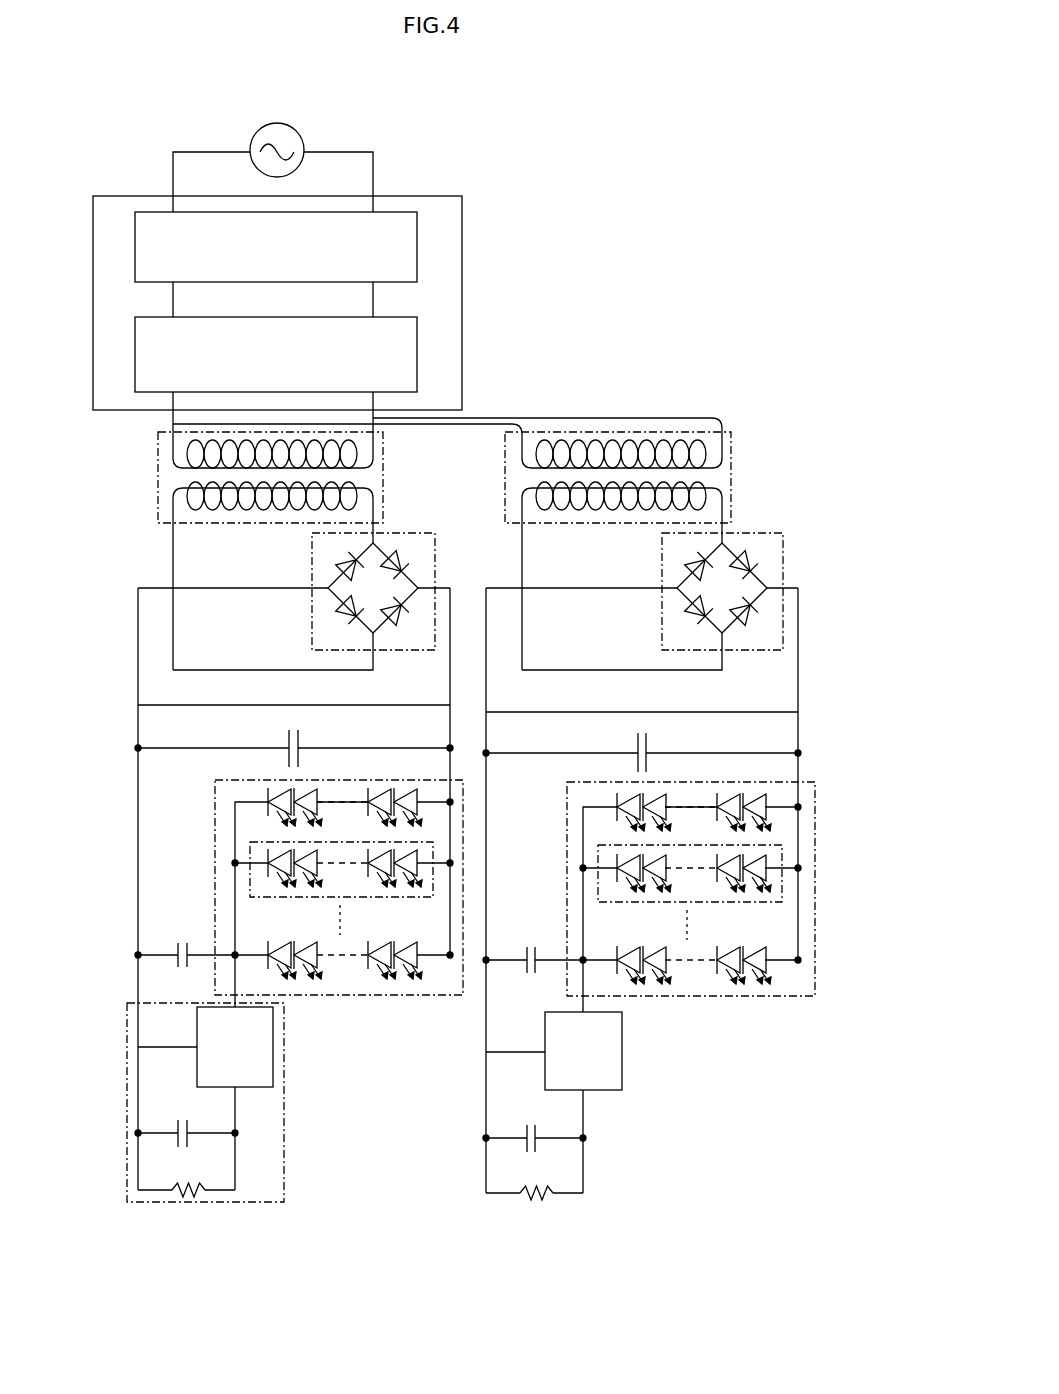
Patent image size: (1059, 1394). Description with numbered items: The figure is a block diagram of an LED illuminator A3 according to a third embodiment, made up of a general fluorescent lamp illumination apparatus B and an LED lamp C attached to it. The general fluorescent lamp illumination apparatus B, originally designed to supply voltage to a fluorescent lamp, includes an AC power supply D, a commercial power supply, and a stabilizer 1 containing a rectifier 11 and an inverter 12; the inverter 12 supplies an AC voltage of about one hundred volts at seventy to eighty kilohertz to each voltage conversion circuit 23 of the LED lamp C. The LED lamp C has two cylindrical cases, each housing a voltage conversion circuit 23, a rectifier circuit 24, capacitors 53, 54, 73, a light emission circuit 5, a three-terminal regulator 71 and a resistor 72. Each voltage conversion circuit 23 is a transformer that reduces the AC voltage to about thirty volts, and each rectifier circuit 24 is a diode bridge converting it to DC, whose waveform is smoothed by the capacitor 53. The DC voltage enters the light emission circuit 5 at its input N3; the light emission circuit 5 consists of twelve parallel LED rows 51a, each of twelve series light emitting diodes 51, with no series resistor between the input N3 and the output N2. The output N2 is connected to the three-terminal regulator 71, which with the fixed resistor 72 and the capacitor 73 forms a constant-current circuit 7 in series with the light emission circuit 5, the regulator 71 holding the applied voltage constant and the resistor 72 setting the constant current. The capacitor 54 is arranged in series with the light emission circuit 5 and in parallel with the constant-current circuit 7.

The AC power supply D is at (280, 124).
The general fluorescent lamp illumination apparatus B is at (452, 155).
The LED illuminator A3 is at (685, 192).
The LED lamp C is at (730, 388).
The stabilizer 1 is at (462, 200).
The rectifier 11 is at (412, 270).
The inverter 12 is at (402, 360).
The voltage conversion circuit 23 is at (160, 466).
The rectifier circuit 24 is at (436, 548).
The capacitor 53 is at (290, 745).
The light emitting diode 51 is at (266, 800).
The light emission circuit 5 is at (447, 877).
The LED row 51a is at (598, 888).
The output N2 is at (236, 955).
The input N3 is at (452, 802).
The capacitor 54 is at (160, 952).
The constant-current circuit 7 is at (391, 1124).
The three-terminal regulator 71 is at (273, 1062).
The resistor 72 is at (208, 1192).
The capacitor 73 is at (176, 1132).